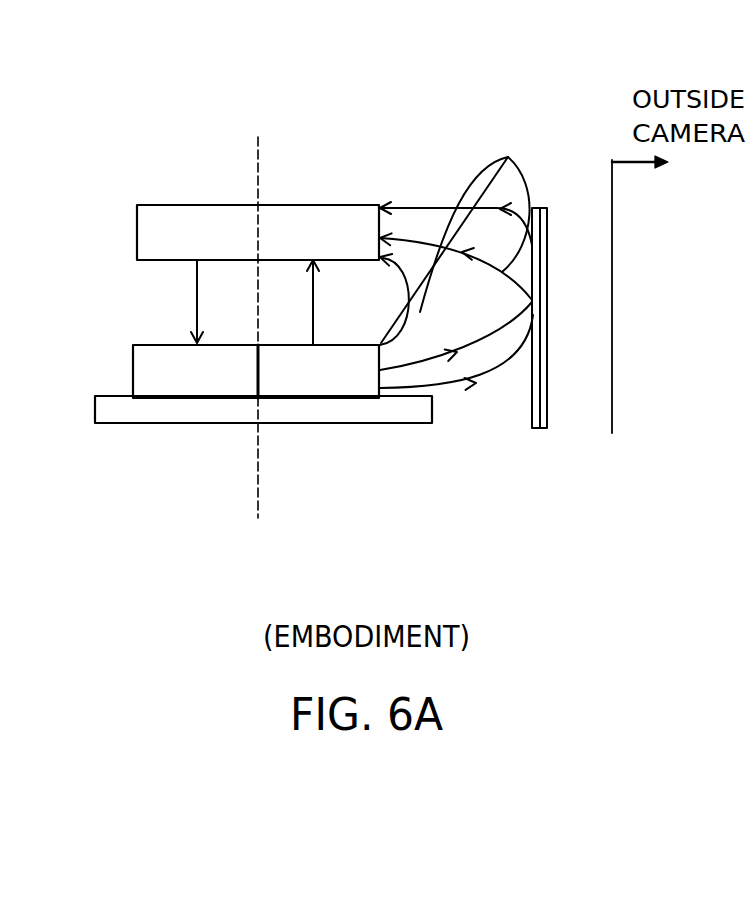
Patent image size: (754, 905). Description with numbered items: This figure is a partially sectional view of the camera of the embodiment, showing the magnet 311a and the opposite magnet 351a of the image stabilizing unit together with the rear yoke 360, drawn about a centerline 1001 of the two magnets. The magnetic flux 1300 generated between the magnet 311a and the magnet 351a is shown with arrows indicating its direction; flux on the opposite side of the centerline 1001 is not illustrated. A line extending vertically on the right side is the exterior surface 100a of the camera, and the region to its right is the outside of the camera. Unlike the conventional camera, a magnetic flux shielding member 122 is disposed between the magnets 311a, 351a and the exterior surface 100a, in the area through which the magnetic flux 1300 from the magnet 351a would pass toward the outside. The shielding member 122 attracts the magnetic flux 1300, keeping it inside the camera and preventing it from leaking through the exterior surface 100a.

The magnet 311a is at (165, 218).
The magnet 351a is at (237, 378).
The rear yoke 360 is at (218, 408).
The centerline 1001 is at (256, 160).
The magnetic flux 1300 is at (197, 283).
The magnetic flux shielding member 122 is at (547, 428).
The exterior surface 100a is at (612, 387).